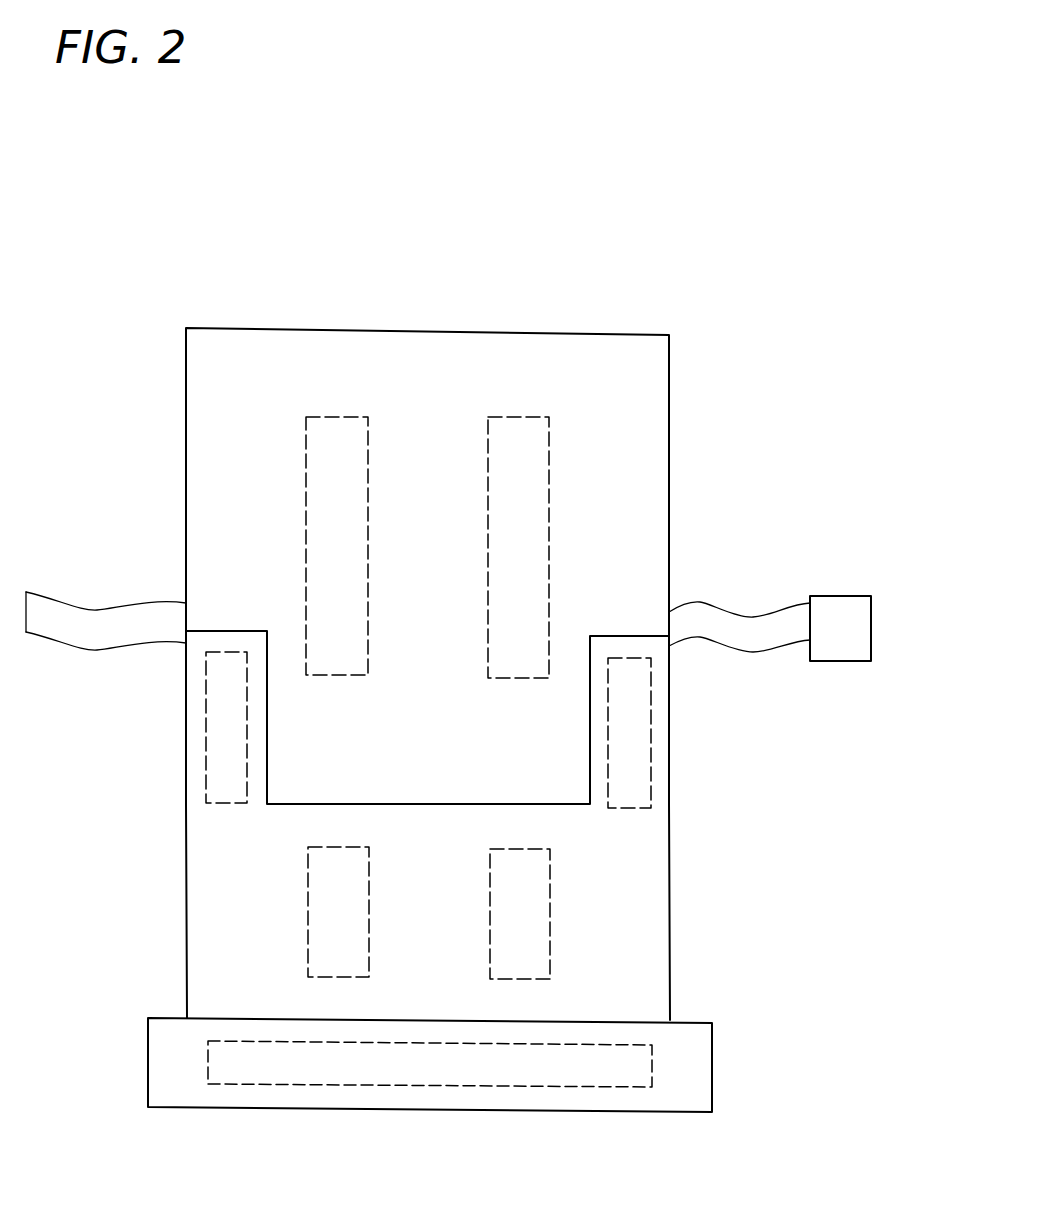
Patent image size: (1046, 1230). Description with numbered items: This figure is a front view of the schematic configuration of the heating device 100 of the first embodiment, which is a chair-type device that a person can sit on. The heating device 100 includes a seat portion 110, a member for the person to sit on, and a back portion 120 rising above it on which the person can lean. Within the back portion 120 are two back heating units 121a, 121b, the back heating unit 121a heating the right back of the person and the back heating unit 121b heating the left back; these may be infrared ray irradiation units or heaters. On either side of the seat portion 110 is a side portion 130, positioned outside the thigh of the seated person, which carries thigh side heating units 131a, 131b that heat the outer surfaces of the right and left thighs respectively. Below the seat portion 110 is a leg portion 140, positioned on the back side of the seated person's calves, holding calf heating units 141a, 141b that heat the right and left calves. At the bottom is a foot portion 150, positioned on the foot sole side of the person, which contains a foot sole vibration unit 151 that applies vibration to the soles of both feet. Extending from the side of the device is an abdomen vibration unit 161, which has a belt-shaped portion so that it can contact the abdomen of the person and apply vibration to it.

The heating device 100 is at (549, 287).
The seat portion 110 is at (466, 804).
The back portion 120 is at (637, 410).
The back heating unit 121a is at (337, 416).
The back heating unit 121b is at (518, 416).
The side portion 130 is at (628, 648).
The thigh side heating unit 131a is at (207, 770).
The thigh side heating unit 131b is at (651, 764).
The leg portion 140 is at (650, 895).
The calf heating unit 141a is at (308, 912).
The calf heating unit 141b is at (550, 943).
The foot portion 150 is at (685, 1047).
The foot sole vibration unit 151 is at (652, 1075).
The abdomen vibration unit 161 is at (841, 648).